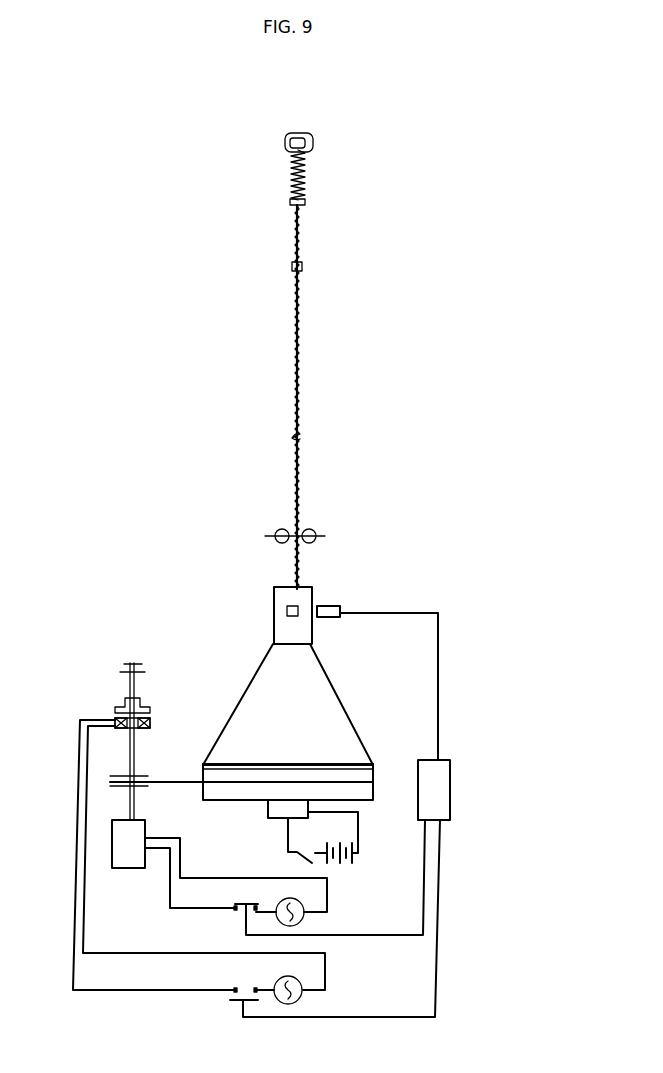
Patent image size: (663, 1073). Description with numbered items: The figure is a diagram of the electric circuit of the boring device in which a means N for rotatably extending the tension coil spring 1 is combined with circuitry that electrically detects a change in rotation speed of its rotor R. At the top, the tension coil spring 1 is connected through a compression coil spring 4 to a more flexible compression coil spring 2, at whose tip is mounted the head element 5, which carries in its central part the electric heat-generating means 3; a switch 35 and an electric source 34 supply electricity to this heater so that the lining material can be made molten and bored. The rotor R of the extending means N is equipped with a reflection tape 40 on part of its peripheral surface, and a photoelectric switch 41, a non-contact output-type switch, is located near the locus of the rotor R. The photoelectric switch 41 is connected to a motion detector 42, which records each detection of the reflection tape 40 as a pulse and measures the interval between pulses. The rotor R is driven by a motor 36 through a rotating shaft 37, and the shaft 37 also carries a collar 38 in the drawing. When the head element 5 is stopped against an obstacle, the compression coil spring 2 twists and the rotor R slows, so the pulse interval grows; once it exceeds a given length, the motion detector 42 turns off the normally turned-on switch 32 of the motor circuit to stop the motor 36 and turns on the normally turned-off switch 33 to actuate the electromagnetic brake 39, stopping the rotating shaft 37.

The tension coil spring 1 is at (298, 353).
The compression coil spring 2 is at (301, 180).
The electric heat-generating means 3 is at (296, 140).
The compression coil spring 4 is at (301, 241).
The head element 5 is at (320, 130).
The normally turned-on switch 32 is at (242, 917).
The normally turned-off switch 33 is at (235, 1002).
The electric source 34 is at (347, 862).
The switch 35 is at (307, 862).
The motor 36 is at (125, 863).
The rotating shaft 37 is at (137, 750).
The shaft 38 is at (173, 783).
The electromagnetic brake 39 is at (118, 708).
The reflection tape 40 is at (287, 608).
The photoelectric switch 41 is at (330, 612).
The motion detector 42 is at (438, 805).
The rotor R is at (283, 632).
The means for rotatably extending the tension coil spring N is at (345, 680).